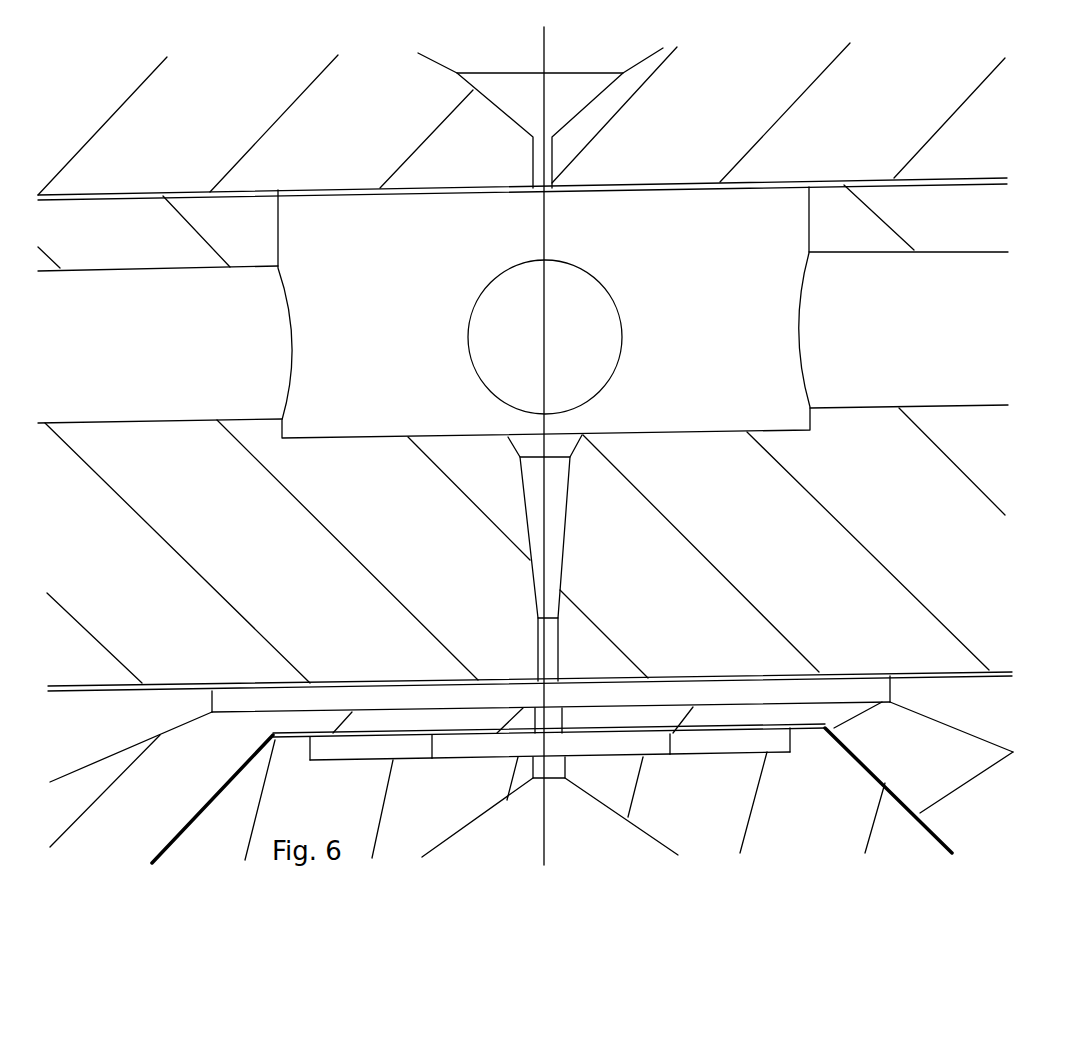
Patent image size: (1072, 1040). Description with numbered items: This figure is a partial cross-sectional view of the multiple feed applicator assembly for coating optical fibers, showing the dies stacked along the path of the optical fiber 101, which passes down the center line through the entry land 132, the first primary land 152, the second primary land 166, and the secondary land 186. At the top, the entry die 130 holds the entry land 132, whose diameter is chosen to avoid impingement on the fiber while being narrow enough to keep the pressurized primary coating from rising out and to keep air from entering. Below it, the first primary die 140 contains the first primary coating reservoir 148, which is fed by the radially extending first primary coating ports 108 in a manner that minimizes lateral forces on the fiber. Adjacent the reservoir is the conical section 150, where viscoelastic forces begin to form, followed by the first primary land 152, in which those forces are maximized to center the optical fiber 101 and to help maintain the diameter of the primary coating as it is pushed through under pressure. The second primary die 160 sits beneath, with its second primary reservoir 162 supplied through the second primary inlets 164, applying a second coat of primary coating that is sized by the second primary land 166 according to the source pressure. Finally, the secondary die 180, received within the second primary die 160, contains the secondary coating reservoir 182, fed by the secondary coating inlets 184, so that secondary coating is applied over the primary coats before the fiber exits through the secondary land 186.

The optical fiber 101 is at (543, 238).
The first primary coating ports 108 is at (160, 364).
The entry die 130 is at (897, 117).
The entry land 132 is at (532, 168).
The first primary die 140 is at (272, 560).
The first primary coating reservoir 148 is at (396, 250).
The conical section 150 is at (567, 538).
The first primary land 152 is at (537, 647).
The second primary die 160 is at (940, 762).
The second primary reservoir 162 is at (408, 700).
The second primary inlets 164 is at (128, 715).
The second primary land 166 is at (570, 718).
The secondary die 180 is at (835, 831).
The secondary coating reservoir 182 is at (357, 750).
The secondary coating inlets 184 is at (498, 742).
The secondary land 186 is at (570, 768).